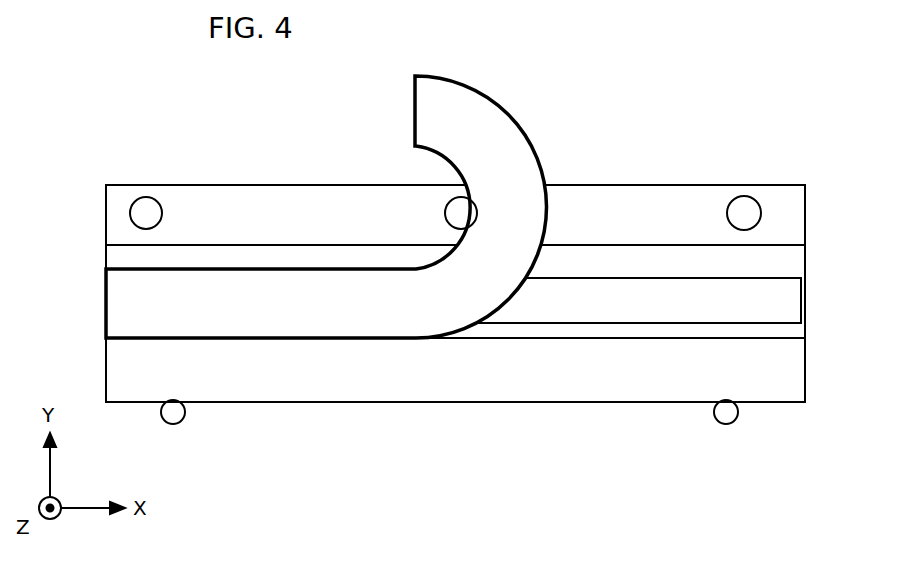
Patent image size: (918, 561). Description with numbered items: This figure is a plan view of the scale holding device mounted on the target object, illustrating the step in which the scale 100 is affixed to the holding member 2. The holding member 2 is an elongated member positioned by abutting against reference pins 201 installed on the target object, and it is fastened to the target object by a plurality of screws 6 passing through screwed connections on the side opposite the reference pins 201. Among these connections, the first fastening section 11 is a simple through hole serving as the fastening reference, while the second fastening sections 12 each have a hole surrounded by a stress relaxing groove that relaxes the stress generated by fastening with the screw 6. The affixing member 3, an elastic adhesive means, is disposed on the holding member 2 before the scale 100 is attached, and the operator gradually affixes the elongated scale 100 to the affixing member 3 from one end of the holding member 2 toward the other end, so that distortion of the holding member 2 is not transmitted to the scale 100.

The holding member 2 is at (443, 388).
The affixing member 3 is at (790, 300).
The screw 6 is at (147, 208).
The first fastening section 11 is at (440, 196).
The second fastening section 12 is at (113, 200).
The scale 100 is at (333, 318).
The reference pin 201 is at (172, 424).